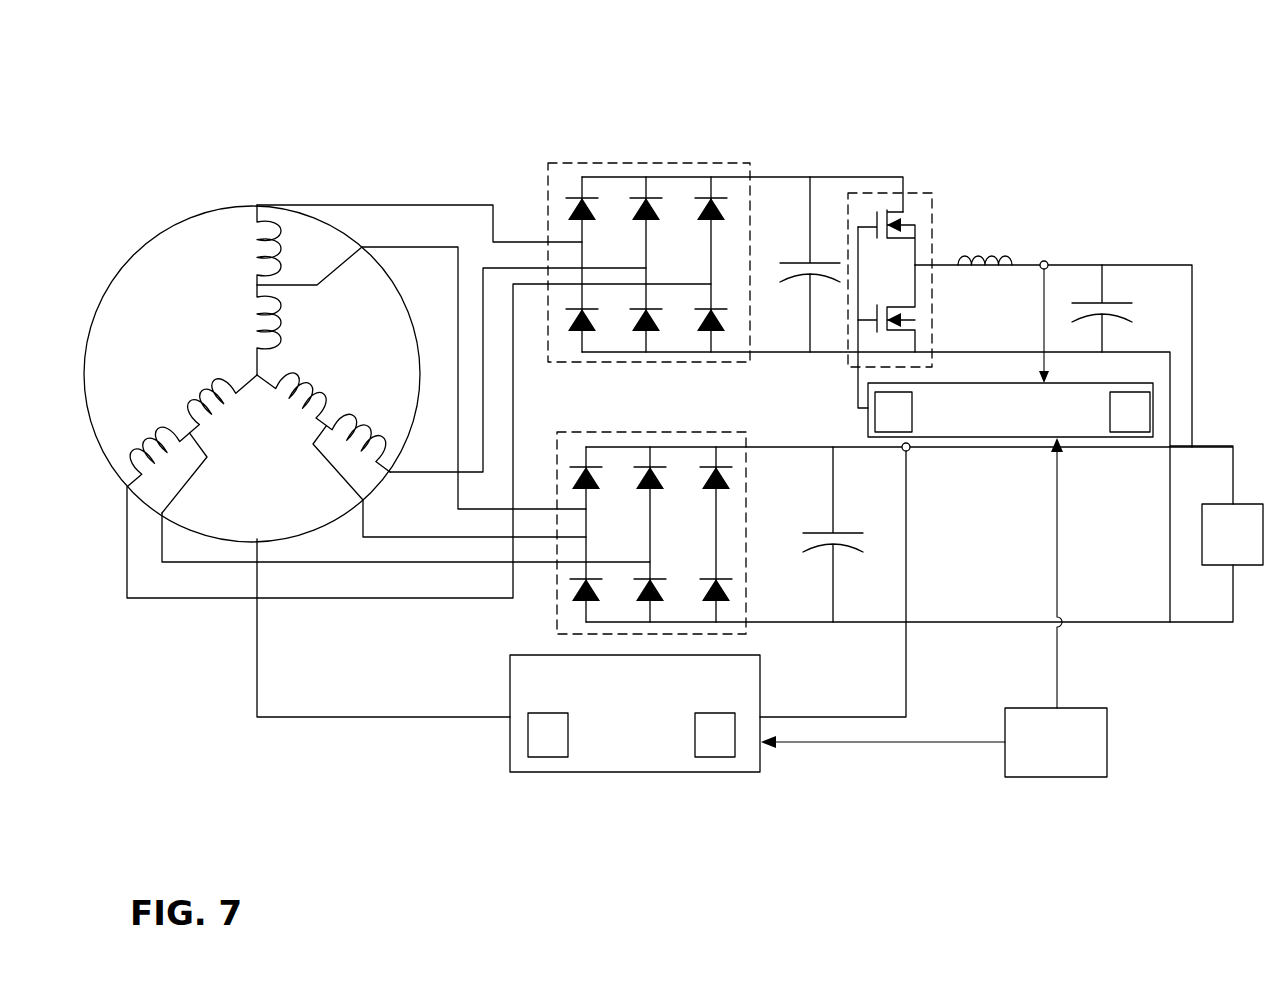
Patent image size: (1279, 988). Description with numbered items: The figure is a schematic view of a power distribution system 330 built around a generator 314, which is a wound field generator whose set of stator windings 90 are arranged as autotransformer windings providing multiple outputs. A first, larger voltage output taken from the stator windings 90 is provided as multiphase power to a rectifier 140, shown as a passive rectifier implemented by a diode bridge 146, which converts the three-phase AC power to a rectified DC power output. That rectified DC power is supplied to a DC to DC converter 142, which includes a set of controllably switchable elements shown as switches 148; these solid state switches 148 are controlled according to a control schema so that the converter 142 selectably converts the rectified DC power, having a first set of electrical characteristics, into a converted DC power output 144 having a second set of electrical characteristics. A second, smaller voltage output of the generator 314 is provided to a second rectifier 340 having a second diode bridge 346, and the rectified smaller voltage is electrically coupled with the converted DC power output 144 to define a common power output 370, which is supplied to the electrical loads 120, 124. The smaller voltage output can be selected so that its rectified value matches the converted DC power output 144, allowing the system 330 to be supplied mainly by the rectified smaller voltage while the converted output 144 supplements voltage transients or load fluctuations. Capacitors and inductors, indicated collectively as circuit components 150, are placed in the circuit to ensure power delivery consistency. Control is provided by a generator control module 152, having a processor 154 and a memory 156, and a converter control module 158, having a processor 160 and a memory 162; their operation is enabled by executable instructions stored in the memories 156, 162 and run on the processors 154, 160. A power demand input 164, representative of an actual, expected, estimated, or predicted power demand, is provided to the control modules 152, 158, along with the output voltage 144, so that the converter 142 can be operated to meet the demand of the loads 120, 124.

The power distribution system 330 is at (432, 31).
The generator 314 is at (148, 232).
The set of stator windings 90 is at (193, 364).
The rectifier 140 is at (643, 160).
The diode bridge 146 is at (690, 172).
The second rectifier 340 is at (628, 428).
The second diode bridge 346 is at (689, 442).
The circuit components 150 is at (823, 252).
The DC to DC converter 142 is at (885, 192).
The switches 148 is at (912, 322).
The converted DC power output 144 is at (1045, 257).
The common power output 370 is at (1208, 422).
The electrical load 120 is at (1232, 534).
The electrical load 124 is at (1232, 534).
The converter control module 158 is at (933, 431).
The processor 160 is at (881, 425).
The memory 162 is at (1117, 425).
The generator control module 152 is at (618, 758).
The processor 154 is at (535, 748).
The memory 156 is at (702, 748).
The power demand input 164 is at (1085, 712).